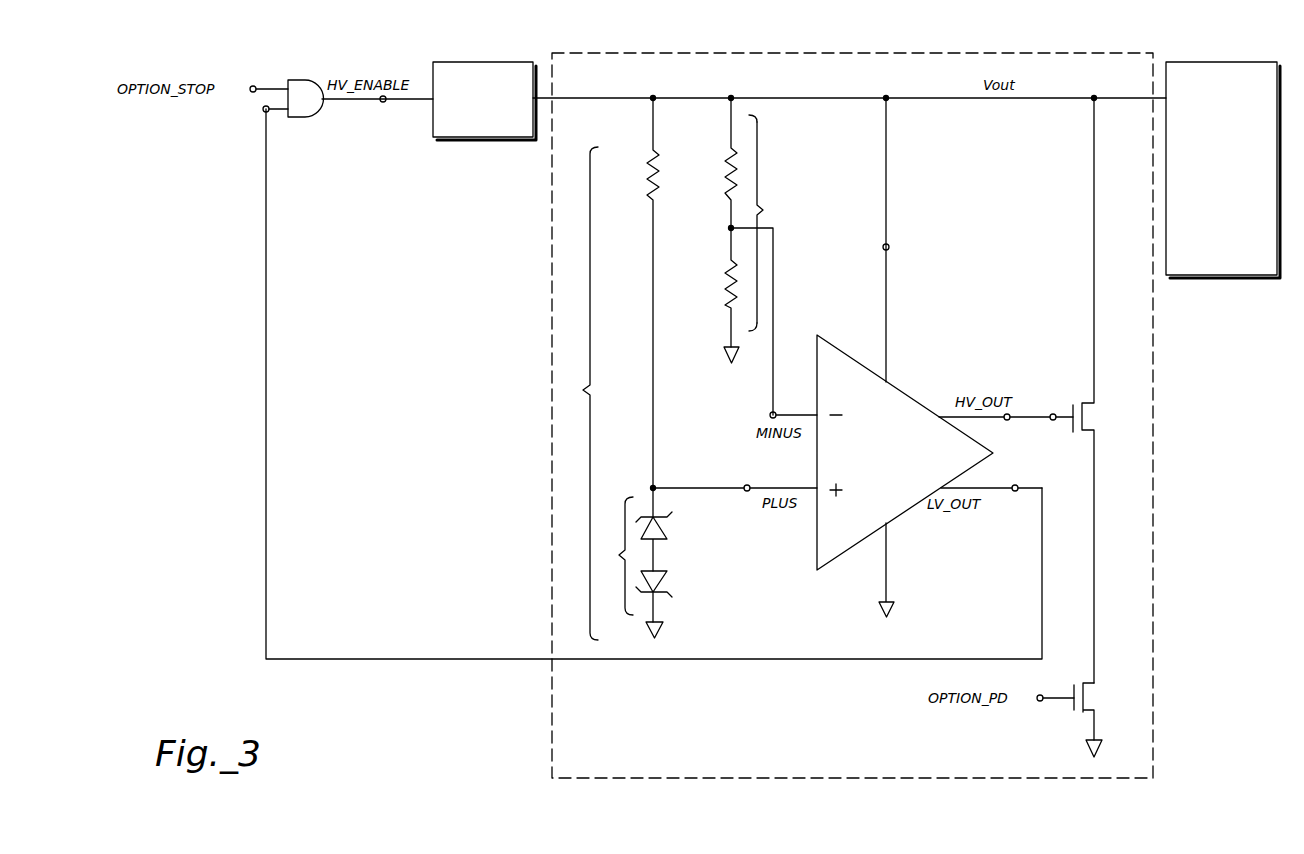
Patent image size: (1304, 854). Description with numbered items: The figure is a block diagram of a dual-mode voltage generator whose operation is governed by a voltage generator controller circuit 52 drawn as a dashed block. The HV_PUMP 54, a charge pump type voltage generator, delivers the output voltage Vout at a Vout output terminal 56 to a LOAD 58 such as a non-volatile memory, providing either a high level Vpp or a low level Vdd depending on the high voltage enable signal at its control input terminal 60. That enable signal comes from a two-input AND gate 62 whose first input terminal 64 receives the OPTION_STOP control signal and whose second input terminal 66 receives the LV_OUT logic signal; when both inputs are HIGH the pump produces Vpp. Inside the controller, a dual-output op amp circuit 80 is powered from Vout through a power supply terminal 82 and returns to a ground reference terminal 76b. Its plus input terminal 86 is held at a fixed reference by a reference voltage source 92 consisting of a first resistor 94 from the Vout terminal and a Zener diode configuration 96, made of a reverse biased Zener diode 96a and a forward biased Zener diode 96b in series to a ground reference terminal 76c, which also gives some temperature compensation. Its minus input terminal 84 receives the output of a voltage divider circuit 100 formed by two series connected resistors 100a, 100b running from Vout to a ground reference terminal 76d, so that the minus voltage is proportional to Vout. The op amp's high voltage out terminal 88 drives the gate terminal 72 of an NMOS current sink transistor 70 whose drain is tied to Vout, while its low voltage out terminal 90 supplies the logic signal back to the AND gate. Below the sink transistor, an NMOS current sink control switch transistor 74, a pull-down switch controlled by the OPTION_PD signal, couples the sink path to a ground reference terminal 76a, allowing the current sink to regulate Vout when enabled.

The voltage generator controller circuit 52 is at (770, 53).
The HV_PUMP 54 is at (490, 62).
The Vout output terminal 56 is at (886, 98).
The LOAD 58 is at (1218, 62).
The control input terminal 60 is at (383, 102).
The 2-input AND gate 62 is at (300, 117).
The first input terminal 64 is at (255, 86).
The second input terminal 66 is at (263, 110).
The NMOS current sink transistor 70 is at (1088, 415).
The gate terminal 72 is at (1054, 413).
The NMOS current sink control switch transistor 74 is at (1091, 702).
The ground reference terminal 76a is at (1098, 752).
The ground reference terminal 76b is at (890, 612).
The ground reference terminal 76c is at (660, 630).
The ground reference terminal 76d is at (727, 358).
The dual-output op amp circuit 80 is at (906, 394).
The power supply terminal 82 is at (889, 246).
The minus input terminal 84 is at (770, 415).
The plus input terminal 86 is at (748, 485).
The high voltage out terminal 88 is at (1008, 421).
The low voltage out terminal 90 is at (1019, 486).
The reference voltage source 92 is at (577, 393).
The first resistor 94 is at (658, 162).
The Zener diode configuration 96 is at (653, 555).
The reverse biased Zener diode 96a is at (665, 529).
The forward biased Zener diode 96b is at (665, 582).
The voltage divider circuit 100 is at (732, 222).
The resistor 100a is at (727, 190).
The resistor 100b is at (728, 262).